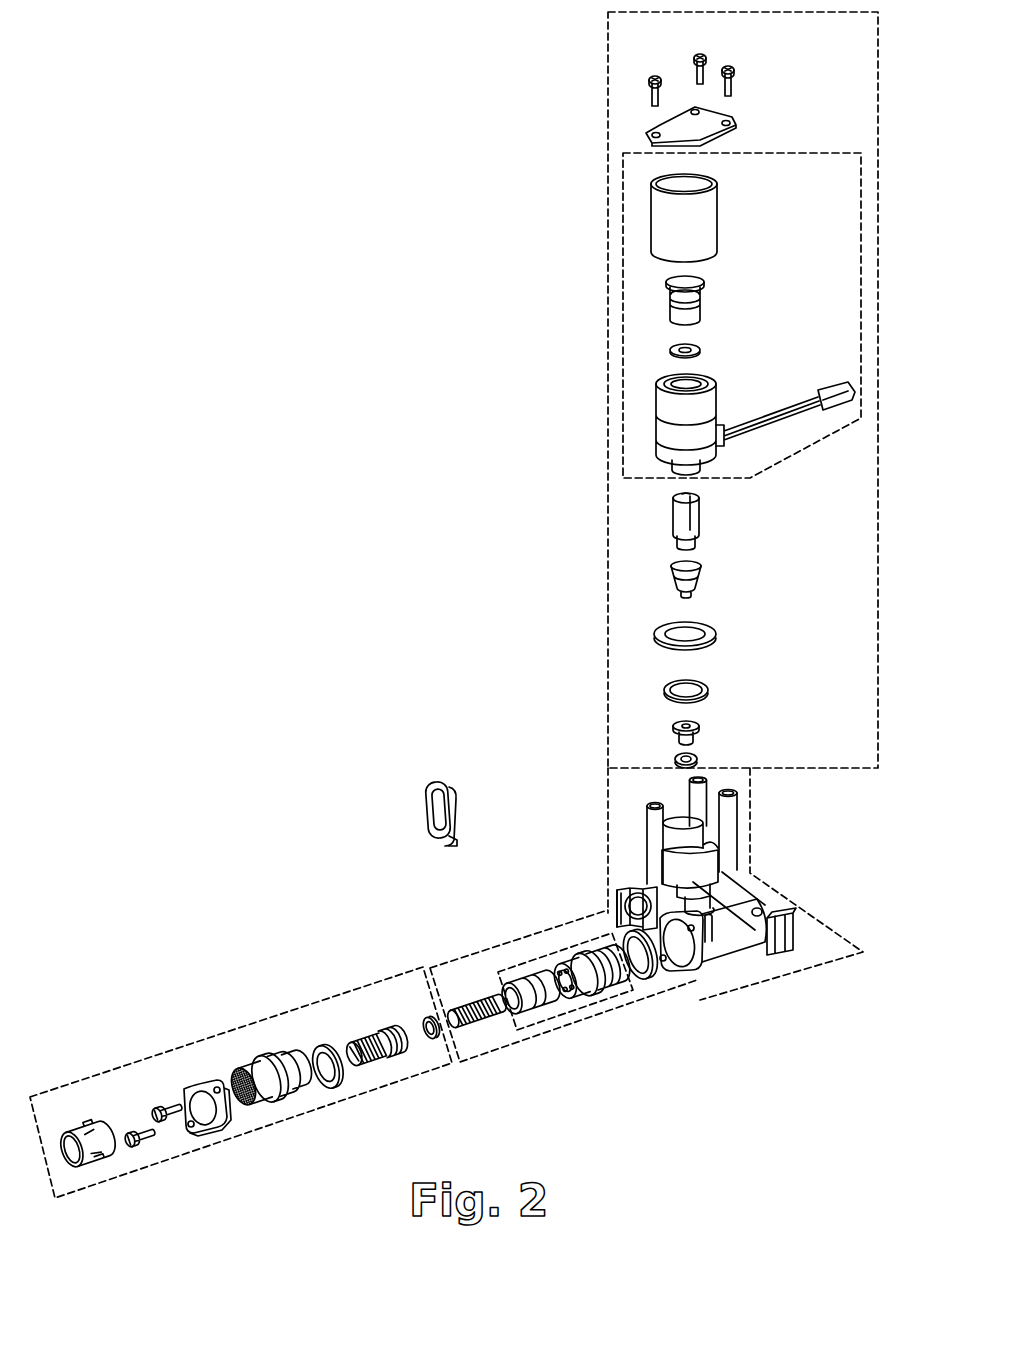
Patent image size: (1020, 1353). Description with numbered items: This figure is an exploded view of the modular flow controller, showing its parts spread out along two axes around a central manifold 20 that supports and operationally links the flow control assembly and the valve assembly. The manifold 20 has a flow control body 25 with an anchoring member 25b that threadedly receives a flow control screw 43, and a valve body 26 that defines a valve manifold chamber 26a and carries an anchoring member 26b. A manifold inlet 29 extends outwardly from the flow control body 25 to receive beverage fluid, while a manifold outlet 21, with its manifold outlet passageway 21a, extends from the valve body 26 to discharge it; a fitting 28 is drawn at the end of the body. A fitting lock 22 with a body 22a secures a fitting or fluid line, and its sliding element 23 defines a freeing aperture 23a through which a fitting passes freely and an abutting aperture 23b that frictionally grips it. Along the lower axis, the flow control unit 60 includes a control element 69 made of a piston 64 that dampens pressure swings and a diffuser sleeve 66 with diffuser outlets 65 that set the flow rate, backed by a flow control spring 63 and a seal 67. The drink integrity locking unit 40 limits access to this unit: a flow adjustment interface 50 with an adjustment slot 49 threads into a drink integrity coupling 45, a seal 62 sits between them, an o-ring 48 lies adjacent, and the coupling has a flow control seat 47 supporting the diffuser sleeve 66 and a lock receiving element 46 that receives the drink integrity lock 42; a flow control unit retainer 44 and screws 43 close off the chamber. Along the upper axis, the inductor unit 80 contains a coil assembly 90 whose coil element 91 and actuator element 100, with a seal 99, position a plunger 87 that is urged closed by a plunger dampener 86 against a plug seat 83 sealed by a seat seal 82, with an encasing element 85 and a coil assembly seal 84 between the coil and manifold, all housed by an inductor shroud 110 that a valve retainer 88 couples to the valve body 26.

The manifold 20 is at (812, 985).
The manifold outlet 21 is at (606, 881).
The manifold outlet passageway 21a is at (595, 886).
The fitting lock 22 is at (663, 900).
The body 22a is at (614, 920).
The sliding element 23 is at (430, 828).
The freeing aperture 23a is at (450, 816).
The abutting aperture 23b is at (447, 824).
The flow control body 25 is at (747, 940).
The anchoring member 25b is at (712, 932).
The valve body 26 is at (714, 833).
The valve manifold chamber 26a is at (680, 830).
The anchoring member 26b is at (722, 780).
The end fitting 28 is at (789, 918).
The manifold inlet 29 is at (762, 910).
The drink integrity locking unit 40 is at (246, 1147).
The drink integrity lock 42 is at (85, 1128).
The flow control screw 43 is at (165, 1116).
The flow control unit retainer 44 is at (195, 1094).
The drink integrity coupling 45 is at (259, 1046).
The lock receiving element 46 is at (250, 1075).
The flow control seat 47 is at (295, 1062).
The O-ring 48 is at (318, 1055).
The adjustment slot 49 is at (362, 1052).
The flow adjustment interface 50 is at (382, 1080).
The flow control unit 60 is at (581, 1042).
The seal 62 is at (424, 1022).
The flow control spring 63 is at (472, 998).
The piston 64 is at (522, 975).
The diffuser outlets 65 is at (575, 975).
The diffuser sleeve 66 is at (597, 1002).
The seal 67 is at (645, 975).
The control element 69 is at (547, 947).
The inductor unit 80 is at (606, 540).
The seat seal 82 is at (698, 760).
The plug seat 83 is at (700, 733).
The coil assembly seal 84 is at (724, 92).
The encasing element 85 is at (714, 632).
The plunger dampener 86 is at (701, 576).
The plunger 87 is at (700, 520).
The valve retainer 88 is at (668, 130).
The coil assembly 90 is at (800, 458).
The coil element 91 is at (722, 395).
The seal 99 is at (702, 349).
The actuator element 100 is at (707, 306).
The inductor shroud 110 is at (705, 230).